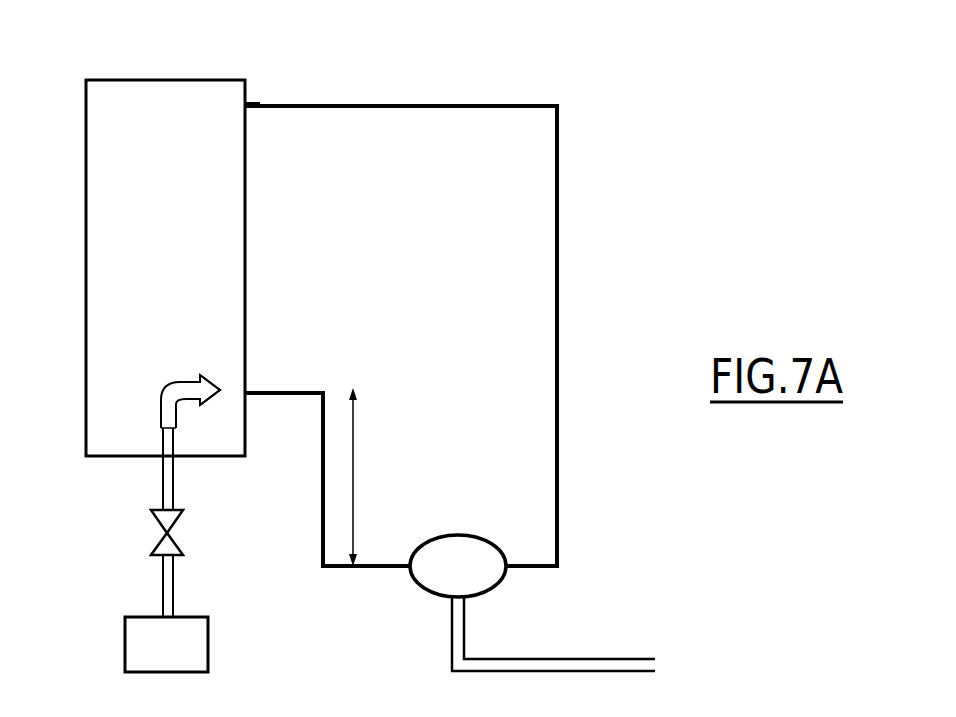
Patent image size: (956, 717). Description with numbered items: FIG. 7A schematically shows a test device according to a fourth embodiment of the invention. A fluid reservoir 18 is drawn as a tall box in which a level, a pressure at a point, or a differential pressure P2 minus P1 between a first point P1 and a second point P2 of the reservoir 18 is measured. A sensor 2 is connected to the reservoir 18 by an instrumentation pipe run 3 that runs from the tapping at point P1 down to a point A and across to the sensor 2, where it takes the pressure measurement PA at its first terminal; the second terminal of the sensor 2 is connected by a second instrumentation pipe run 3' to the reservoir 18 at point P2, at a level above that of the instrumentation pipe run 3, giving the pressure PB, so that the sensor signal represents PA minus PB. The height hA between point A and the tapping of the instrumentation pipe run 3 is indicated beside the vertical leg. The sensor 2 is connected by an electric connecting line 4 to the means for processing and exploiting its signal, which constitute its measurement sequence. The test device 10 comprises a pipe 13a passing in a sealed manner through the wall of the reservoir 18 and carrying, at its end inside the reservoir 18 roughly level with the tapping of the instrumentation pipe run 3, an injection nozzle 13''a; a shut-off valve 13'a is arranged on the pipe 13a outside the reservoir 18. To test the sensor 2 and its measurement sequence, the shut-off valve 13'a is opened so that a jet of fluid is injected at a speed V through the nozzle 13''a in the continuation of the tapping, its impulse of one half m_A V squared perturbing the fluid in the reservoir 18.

The fluid reservoir 18 is at (182, 89).
The second instrumentation pipe run 3' is at (401, 310).
The instrumentation pipe run 3 is at (327, 479).
The sensor 2 is at (449, 540).
The electric connecting line 4 is at (613, 659).
The pipe 13a is at (175, 493).
The shut-off valve 13'a is at (135, 532).
The injection nozzle 13''a is at (156, 401).
The test device 10 is at (116, 591).
The first pressure point P1 is at (261, 408).
The second pressure measurement P2 is at (264, 122).
The pressure at first sensor terminal PA is at (402, 589).
The pressure at second sensor terminal PB is at (521, 589).
The point A is at (353, 582).
The speed of injected fluid V is at (184, 385).
The height hA is at (373, 477).